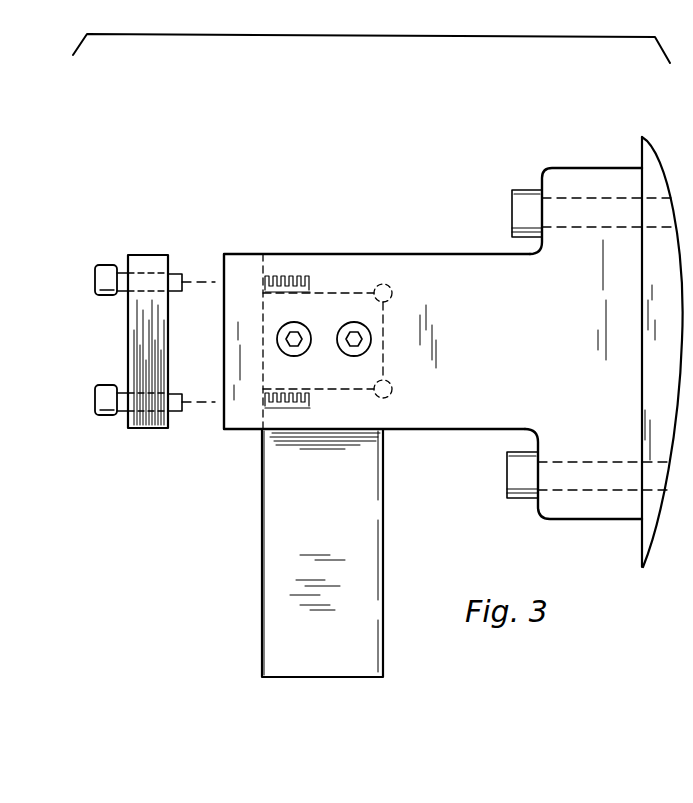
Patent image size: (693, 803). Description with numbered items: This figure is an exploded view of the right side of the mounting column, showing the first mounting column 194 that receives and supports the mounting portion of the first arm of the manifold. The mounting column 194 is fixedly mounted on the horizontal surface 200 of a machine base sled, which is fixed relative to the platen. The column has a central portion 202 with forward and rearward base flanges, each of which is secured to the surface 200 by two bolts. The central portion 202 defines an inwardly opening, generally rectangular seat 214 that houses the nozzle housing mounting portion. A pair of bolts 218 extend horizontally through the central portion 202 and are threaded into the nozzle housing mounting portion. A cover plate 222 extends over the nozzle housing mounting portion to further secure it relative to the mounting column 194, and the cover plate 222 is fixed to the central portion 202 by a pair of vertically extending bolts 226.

The first mounting column 194 is at (248, 238).
The horizontal surface 200 is at (643, 141).
The central portion 202 is at (469, 265).
The seat 214 is at (322, 300).
The bolt 218 is at (355, 349).
The cover plate 222 is at (150, 429).
The bolt 226 is at (112, 299).